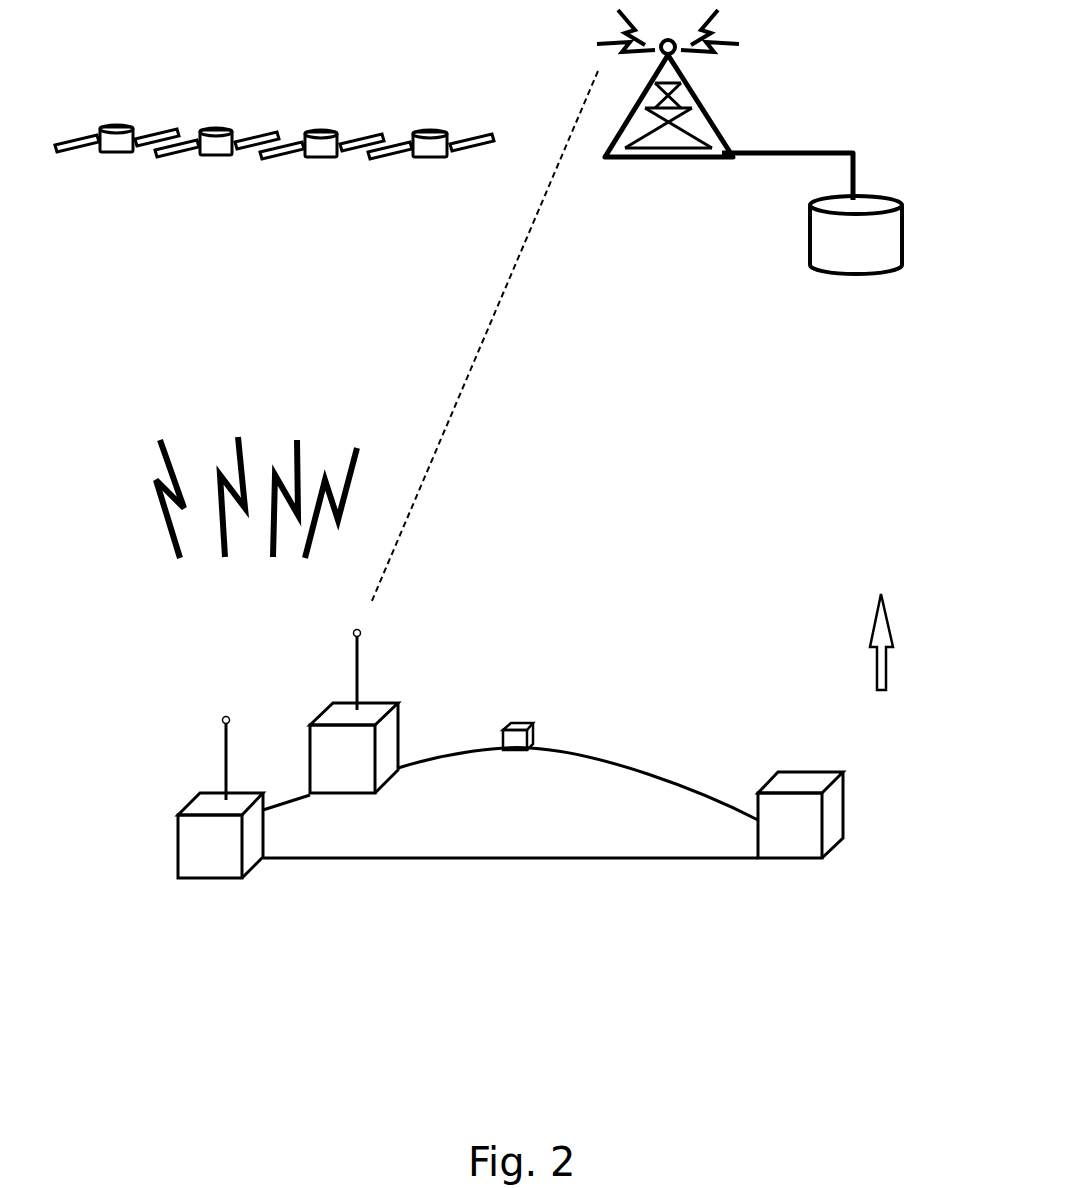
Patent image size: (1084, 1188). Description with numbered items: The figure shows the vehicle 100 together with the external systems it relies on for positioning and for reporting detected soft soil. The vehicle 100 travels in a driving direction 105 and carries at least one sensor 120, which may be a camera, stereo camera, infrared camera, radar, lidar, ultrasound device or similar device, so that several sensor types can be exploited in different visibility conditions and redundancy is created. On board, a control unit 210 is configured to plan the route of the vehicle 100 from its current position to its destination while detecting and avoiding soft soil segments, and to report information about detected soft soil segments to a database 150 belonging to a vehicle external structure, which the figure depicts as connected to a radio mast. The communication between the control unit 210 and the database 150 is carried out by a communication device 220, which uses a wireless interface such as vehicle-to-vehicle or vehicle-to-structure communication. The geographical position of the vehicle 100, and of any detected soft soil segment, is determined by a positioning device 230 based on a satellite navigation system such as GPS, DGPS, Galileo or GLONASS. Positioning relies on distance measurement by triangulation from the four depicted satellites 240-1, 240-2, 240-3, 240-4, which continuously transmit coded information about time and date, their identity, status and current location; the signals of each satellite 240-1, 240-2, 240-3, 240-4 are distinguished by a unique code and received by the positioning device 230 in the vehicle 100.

The satellite 240-1 is at (75, 138).
The satellite 240-2 is at (185, 142).
The satellite 240-3 is at (290, 143).
The satellite 240-4 is at (403, 143).
The database 150 is at (880, 256).
The vehicle 100 is at (540, 820).
The positioning device 230 is at (235, 860).
The communication device 220 is at (367, 770).
The control unit 210 is at (815, 838).
The sensor 120 is at (516, 722).
The driving direction 105 is at (913, 642).